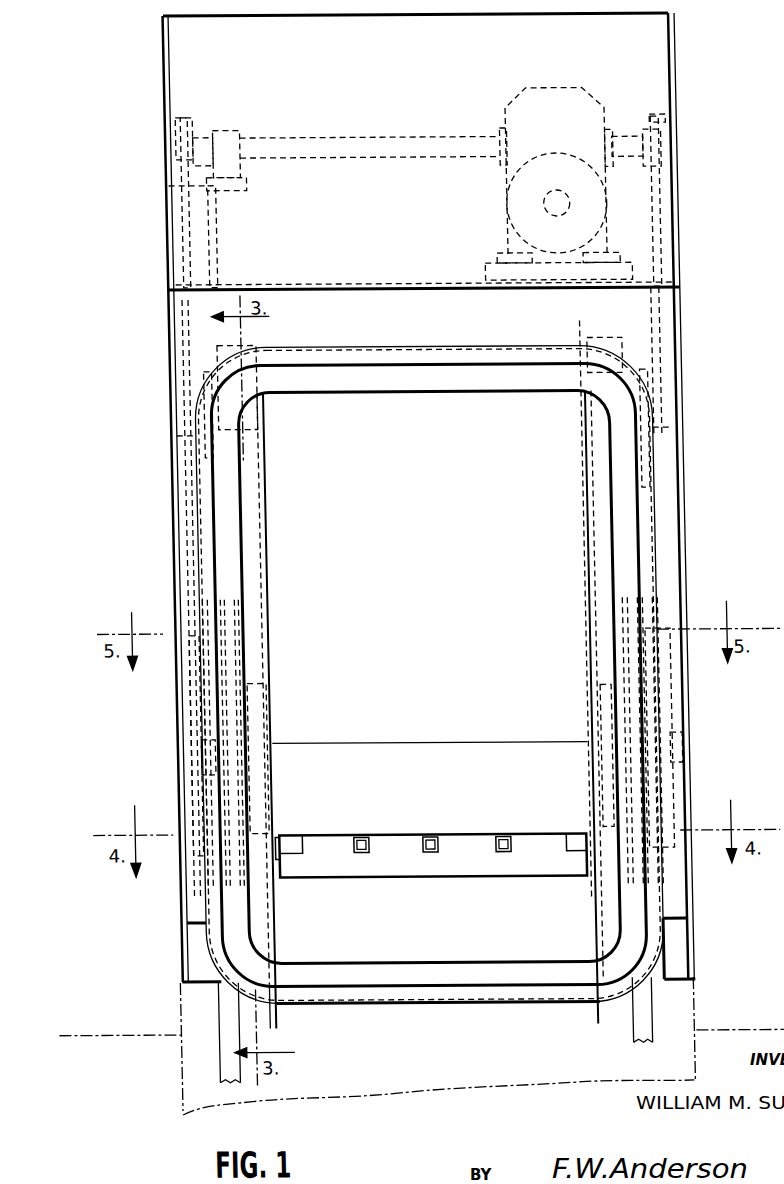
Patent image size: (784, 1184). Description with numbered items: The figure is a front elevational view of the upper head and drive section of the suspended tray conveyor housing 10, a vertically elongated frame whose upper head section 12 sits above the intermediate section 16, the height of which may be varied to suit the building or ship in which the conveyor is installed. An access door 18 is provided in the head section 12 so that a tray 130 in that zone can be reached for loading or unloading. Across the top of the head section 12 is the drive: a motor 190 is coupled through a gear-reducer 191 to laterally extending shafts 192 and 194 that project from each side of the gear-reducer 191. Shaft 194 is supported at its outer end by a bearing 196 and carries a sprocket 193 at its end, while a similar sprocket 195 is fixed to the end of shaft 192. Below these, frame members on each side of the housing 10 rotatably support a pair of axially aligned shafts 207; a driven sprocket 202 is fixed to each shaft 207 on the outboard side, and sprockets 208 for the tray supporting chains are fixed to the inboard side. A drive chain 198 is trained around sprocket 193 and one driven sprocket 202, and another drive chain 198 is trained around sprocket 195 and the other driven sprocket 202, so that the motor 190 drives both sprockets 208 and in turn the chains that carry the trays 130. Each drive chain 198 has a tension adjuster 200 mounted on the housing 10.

The housing 10 is at (65, 494).
The upper head section 12 is at (673, 468).
The intermediate section 16 is at (676, 1018).
The access door 18 is at (325, 396).
The tray 130 is at (309, 839).
The motor 190 is at (533, 204).
The gear-reducer 191 is at (571, 105).
The shaft 192 is at (625, 144).
The sprocket 193 is at (182, 128).
The shaft 194 is at (325, 147).
The sprocket 195 is at (657, 125).
The bearing 196 is at (227, 140).
The drive chain 198 is at (178, 322).
The tension adjuster 200 is at (181, 408).
The driven sprocket 202 is at (180, 708).
The shaft 207 is at (174, 757).
The sprocket 208 is at (238, 684).